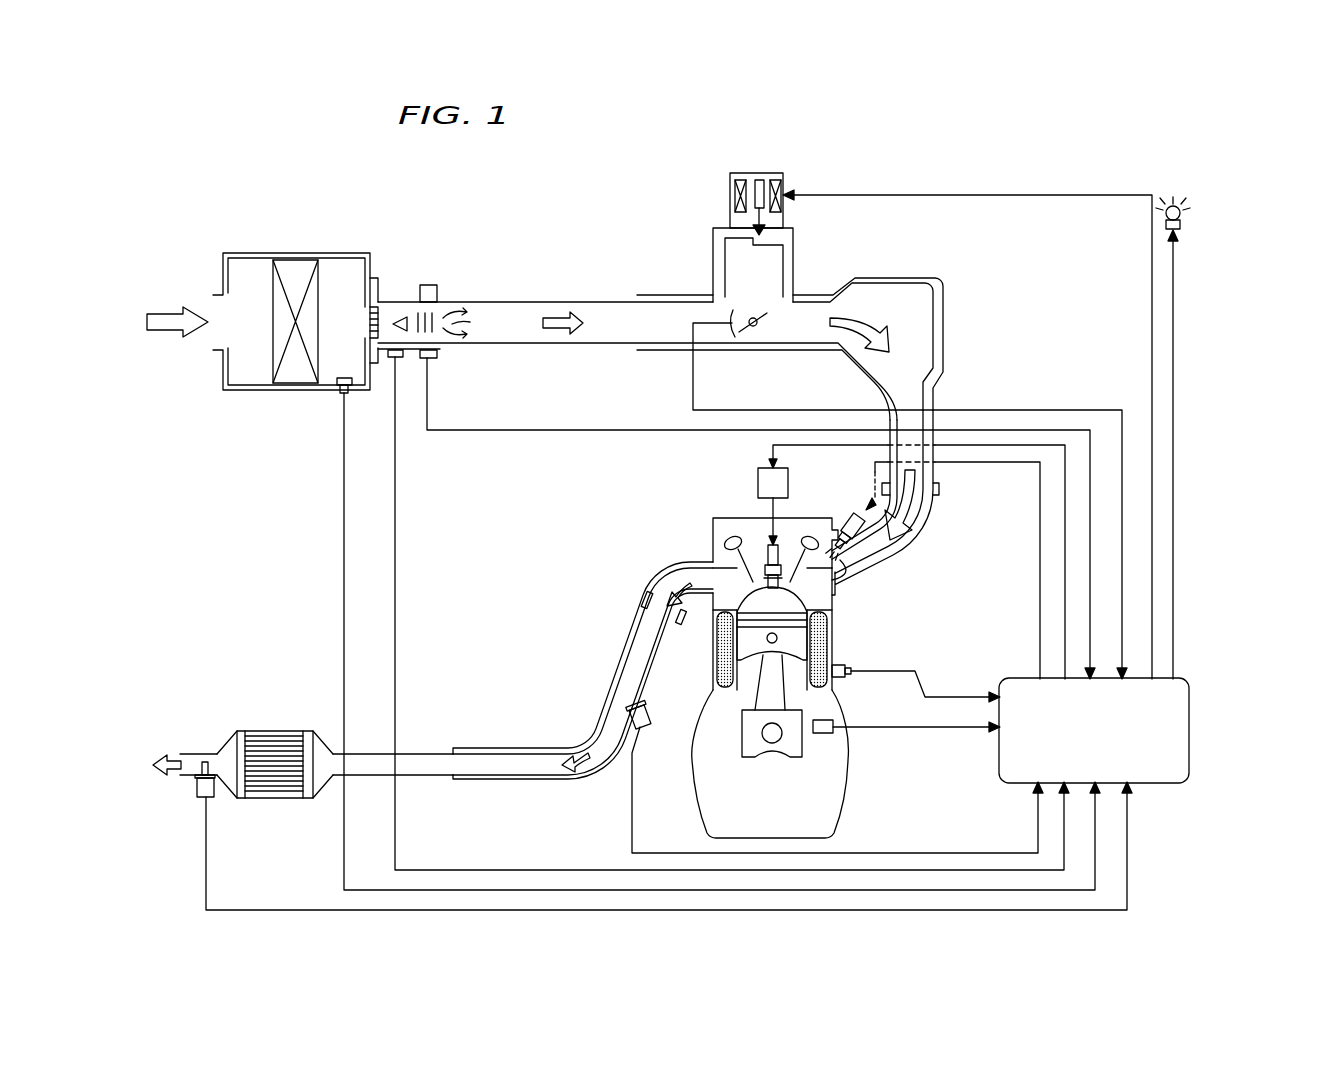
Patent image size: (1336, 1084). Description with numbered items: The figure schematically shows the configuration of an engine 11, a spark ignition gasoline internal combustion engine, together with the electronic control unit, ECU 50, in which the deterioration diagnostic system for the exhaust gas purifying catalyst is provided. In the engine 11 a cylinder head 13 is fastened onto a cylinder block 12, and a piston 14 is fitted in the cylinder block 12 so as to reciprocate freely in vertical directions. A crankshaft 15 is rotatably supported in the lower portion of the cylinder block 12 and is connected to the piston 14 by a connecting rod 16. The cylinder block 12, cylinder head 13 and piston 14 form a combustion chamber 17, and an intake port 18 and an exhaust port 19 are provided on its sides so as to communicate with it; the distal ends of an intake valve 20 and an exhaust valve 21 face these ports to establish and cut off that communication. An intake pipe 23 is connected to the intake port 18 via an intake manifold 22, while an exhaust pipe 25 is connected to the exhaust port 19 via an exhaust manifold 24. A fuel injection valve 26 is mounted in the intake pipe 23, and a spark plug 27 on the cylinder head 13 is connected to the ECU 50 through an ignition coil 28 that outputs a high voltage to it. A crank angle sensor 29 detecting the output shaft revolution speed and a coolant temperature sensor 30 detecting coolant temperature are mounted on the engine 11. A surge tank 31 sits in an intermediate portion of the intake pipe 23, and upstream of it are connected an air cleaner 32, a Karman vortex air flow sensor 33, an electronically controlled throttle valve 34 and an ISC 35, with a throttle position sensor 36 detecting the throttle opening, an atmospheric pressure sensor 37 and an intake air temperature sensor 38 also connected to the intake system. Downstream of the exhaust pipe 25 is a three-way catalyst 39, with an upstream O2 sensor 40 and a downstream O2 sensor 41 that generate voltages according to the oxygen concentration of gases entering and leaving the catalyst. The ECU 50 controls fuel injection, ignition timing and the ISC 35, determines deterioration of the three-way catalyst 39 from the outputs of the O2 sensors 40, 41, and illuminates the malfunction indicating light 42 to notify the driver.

The engine 11 is at (838, 634).
The cylinder block 12 is at (835, 622).
The cylinder head 13 is at (722, 520).
The piston 14 is at (830, 610).
The crankshaft 15 is at (762, 735).
The connecting rod 16 is at (792, 718).
The combustion chamber 17 is at (720, 665).
The intake port 18 is at (806, 545).
The exhaust port 19 is at (700, 565).
The intake valve 20 is at (779, 545).
The exhaust valve 21 is at (748, 588).
The intake manifold 22 is at (925, 545).
The intake pipe 23 is at (943, 343).
The exhaust manifold 24 is at (672, 572).
The exhaust pipe 25 is at (626, 633).
The fuel injection valve 26 is at (848, 520).
The spark plug 27 is at (767, 556).
The ignition coil 28 is at (757, 476).
The crank angle sensor 29 is at (835, 733).
The coolant temperature sensor 30 is at (853, 668).
The surge tank 31 is at (908, 287).
The air cleaner 32 is at (306, 262).
The Karman vortex air flow sensor 33 is at (438, 358).
The electronically controlled throttle valve 34 is at (782, 322).
The ISC (idle speed controller) 35 is at (760, 168).
The throttle position sensor 36 is at (740, 330).
The atmospheric pressure sensor 37 is at (340, 390).
The intake air temperature sensor 38 is at (393, 358).
The three-way catalyst 39 is at (284, 730).
The upstream O2 sensor 40 is at (650, 712).
The downstream O2 sensor 41 is at (212, 790).
The malfunction indicating light 42 is at (1182, 224).
The ECU 50 is at (1192, 733).